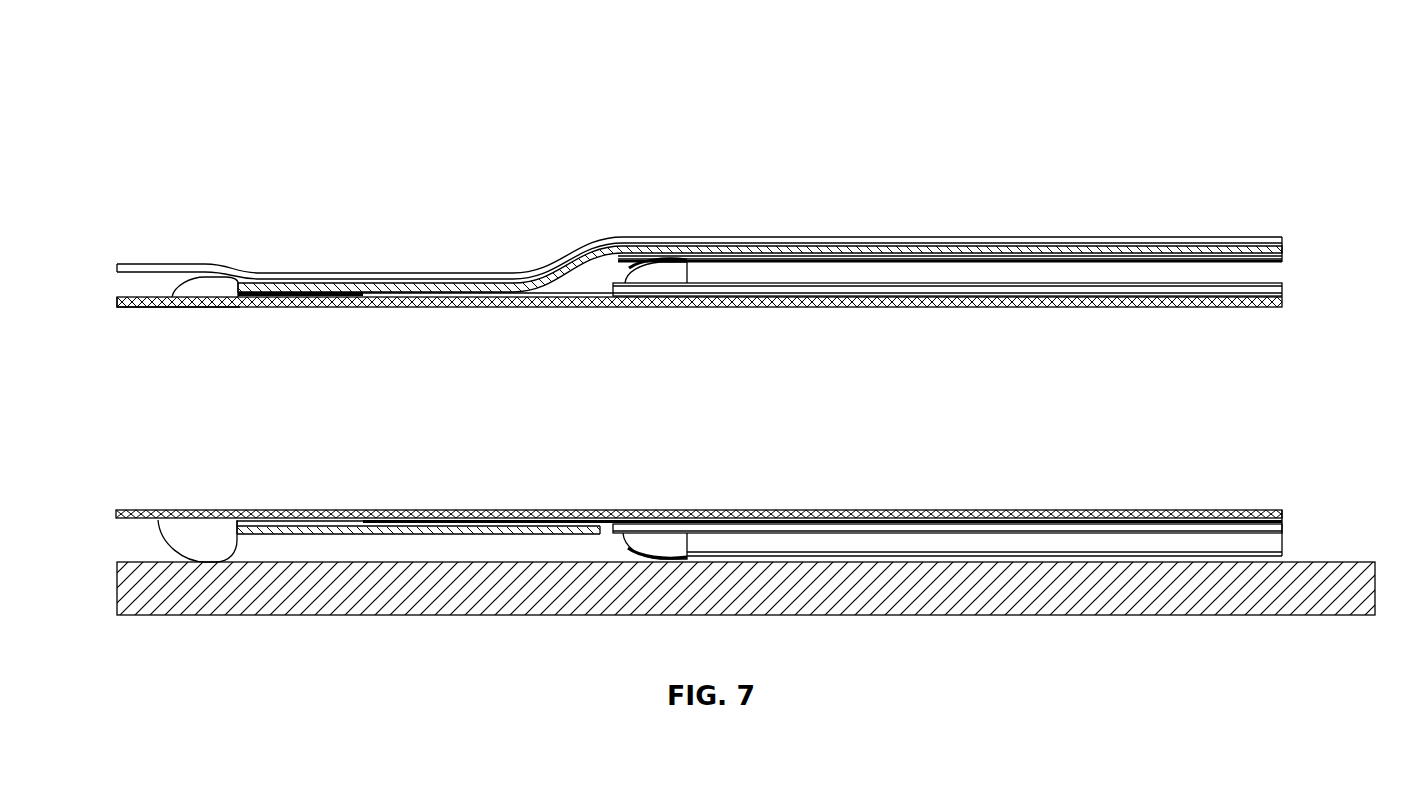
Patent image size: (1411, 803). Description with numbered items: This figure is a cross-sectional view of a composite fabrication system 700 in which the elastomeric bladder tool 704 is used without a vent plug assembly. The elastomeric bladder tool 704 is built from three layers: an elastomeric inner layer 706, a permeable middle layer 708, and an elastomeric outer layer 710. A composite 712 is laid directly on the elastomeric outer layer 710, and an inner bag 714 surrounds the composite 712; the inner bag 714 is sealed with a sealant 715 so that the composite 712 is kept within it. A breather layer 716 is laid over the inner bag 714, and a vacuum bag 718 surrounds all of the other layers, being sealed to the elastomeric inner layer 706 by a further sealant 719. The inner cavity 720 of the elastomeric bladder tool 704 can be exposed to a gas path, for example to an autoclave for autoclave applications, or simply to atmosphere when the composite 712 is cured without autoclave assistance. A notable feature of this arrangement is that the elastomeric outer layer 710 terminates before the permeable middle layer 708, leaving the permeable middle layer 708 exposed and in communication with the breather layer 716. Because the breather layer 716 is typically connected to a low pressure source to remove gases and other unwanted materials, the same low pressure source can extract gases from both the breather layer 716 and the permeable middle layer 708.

The composite fabrication system 700 is at (198, 70).
The elastomeric bladder tool 704 is at (1290, 300).
The elastomeric inner layer 706 is at (155, 300).
The permeable middle layer 708 is at (560, 293).
The elastomeric outer layer 710 is at (618, 282).
The composite 712 is at (1285, 276).
The inner bag 714 is at (433, 293).
The sealant 715 is at (673, 272).
The breather layer 716 is at (1285, 248).
The vacuum bag 718 is at (1232, 237).
The sealant 719 is at (210, 292).
The inner cavity 720 is at (713, 427).